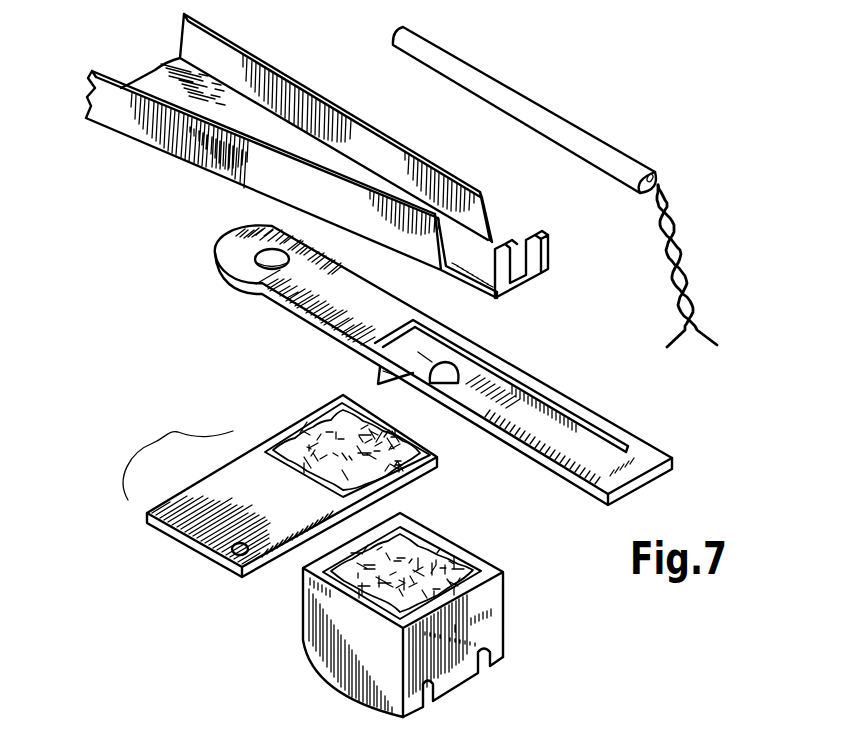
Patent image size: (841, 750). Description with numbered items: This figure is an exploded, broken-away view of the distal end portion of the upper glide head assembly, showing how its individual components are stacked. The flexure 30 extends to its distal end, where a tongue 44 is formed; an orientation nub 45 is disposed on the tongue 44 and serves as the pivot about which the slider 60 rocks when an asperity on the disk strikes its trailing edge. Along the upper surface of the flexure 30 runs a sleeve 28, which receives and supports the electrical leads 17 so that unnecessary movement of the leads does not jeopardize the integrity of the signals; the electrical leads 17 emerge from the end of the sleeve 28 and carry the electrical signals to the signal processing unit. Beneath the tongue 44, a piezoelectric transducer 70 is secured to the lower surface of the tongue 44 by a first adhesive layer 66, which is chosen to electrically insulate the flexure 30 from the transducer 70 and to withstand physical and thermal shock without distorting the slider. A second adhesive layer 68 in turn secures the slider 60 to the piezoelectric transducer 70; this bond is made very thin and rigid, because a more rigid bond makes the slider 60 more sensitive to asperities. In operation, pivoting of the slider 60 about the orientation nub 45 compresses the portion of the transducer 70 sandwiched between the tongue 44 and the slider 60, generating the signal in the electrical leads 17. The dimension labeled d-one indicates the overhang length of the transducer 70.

The electrical leads 17 is at (692, 247).
The sleeve 28 is at (552, 125).
The flexure 30 is at (132, 118).
The tongue 44 is at (583, 447).
The orientation nub 45 is at (387, 367).
The slider 60 is at (477, 605).
The first adhesive layer 66 is at (313, 420).
The second adhesive layer 68 is at (428, 558).
The piezoelectric transducer 70 is at (190, 532).